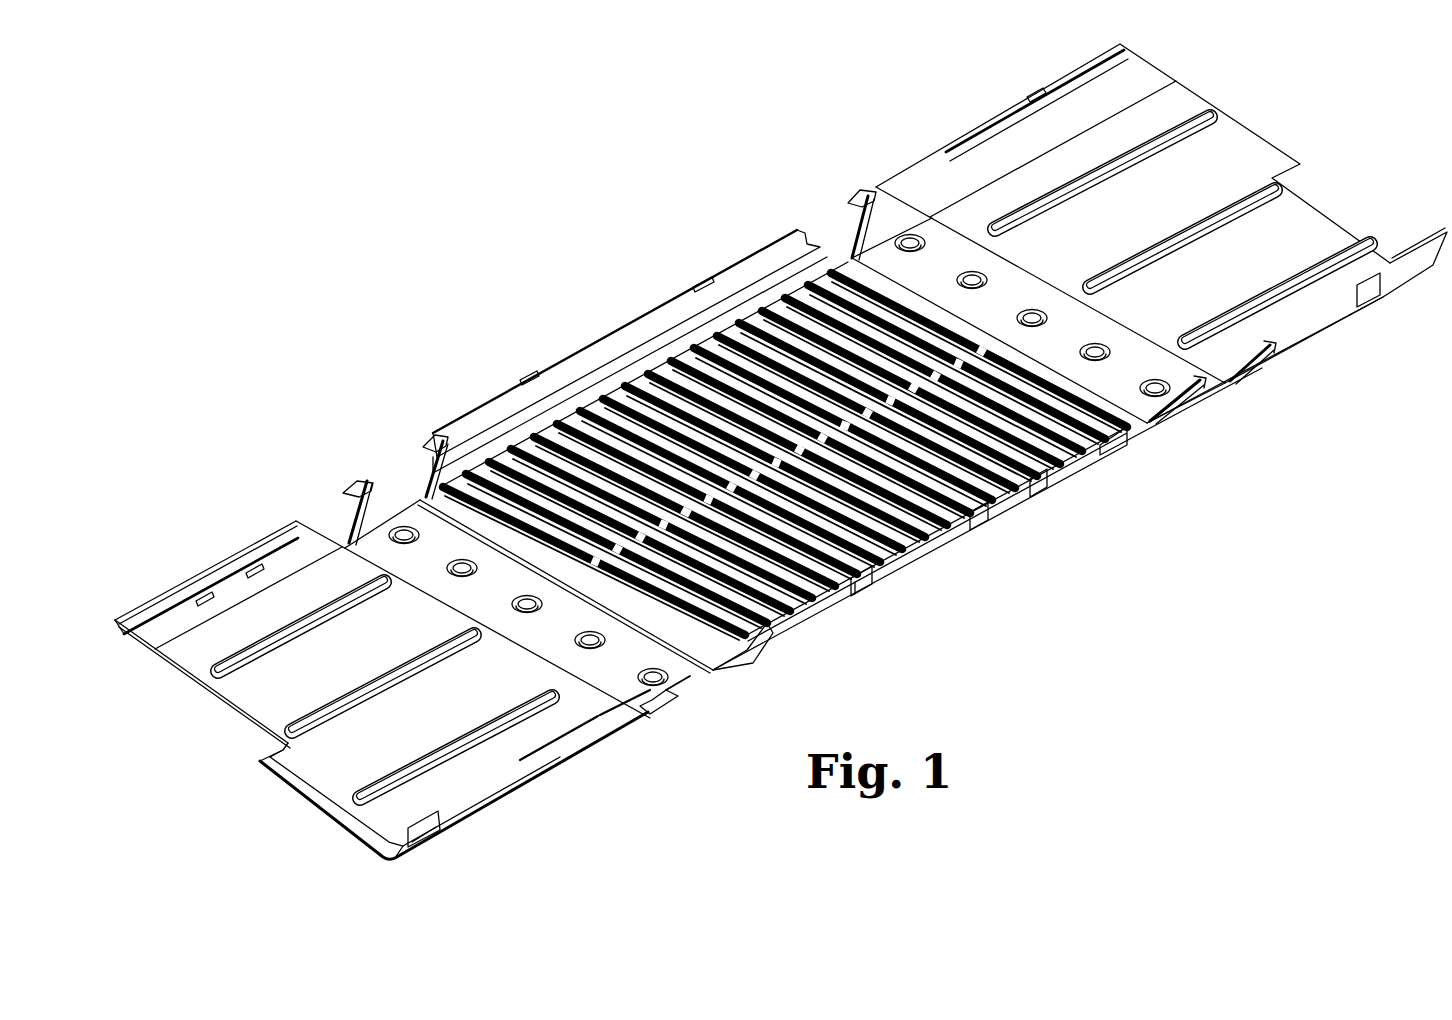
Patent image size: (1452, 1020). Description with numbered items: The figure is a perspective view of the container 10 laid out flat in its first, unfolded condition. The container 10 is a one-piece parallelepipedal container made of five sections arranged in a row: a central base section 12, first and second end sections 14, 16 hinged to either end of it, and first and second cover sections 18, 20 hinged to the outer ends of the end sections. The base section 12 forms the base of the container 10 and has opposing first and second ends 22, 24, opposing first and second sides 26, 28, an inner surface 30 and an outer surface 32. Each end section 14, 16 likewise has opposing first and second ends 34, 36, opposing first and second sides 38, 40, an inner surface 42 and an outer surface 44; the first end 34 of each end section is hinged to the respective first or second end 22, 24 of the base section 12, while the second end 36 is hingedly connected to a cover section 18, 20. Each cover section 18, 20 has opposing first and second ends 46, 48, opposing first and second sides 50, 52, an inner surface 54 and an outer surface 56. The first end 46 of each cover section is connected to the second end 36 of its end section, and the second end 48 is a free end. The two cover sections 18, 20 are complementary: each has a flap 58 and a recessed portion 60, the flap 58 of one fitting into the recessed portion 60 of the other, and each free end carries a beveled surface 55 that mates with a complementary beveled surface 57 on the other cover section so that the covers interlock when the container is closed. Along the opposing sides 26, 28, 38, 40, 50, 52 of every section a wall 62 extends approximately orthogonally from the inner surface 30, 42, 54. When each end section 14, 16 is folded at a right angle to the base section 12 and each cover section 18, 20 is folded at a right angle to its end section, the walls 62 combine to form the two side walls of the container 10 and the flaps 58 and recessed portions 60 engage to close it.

The container 10 is at (970, 588).
The base section 12 is at (670, 340).
The first end section 14 is at (943, 260).
The second end section 16 is at (433, 545).
The first cover section 18 is at (990, 205).
The second cover section 20 is at (243, 620).
The first end of base section 22 is at (848, 248).
The second end of base section 24 is at (428, 505).
The first side of base section 26 is at (595, 363).
The second side of base section 28 is at (850, 600).
The inner surface of base section 30 is at (993, 500).
The outer surface of base section 32 is at (1100, 470).
The first end of end section 34 is at (687, 687).
The second end of end section 36 is at (347, 496).
The first side of end section 38 is at (375, 505).
The second side of end section 40 is at (668, 692).
The inner surface of end section 42 is at (567, 633).
The outer surface of end section 44 is at (707, 680).
The first end of cover section 46 is at (533, 647).
The second end of cover section 48 is at (197, 681).
The first side of cover section 50 is at (170, 607).
The second side of cover section 52 is at (417, 827).
The inner surface of cover section 54 is at (282, 688).
The beveled surface 55 is at (295, 788).
The outer surface of cover section 56 is at (362, 842).
The complementary beveled surface 57 is at (218, 696).
The flap 58 is at (333, 790).
The recessed portion 60 is at (266, 750).
The wall 62 is at (787, 630).